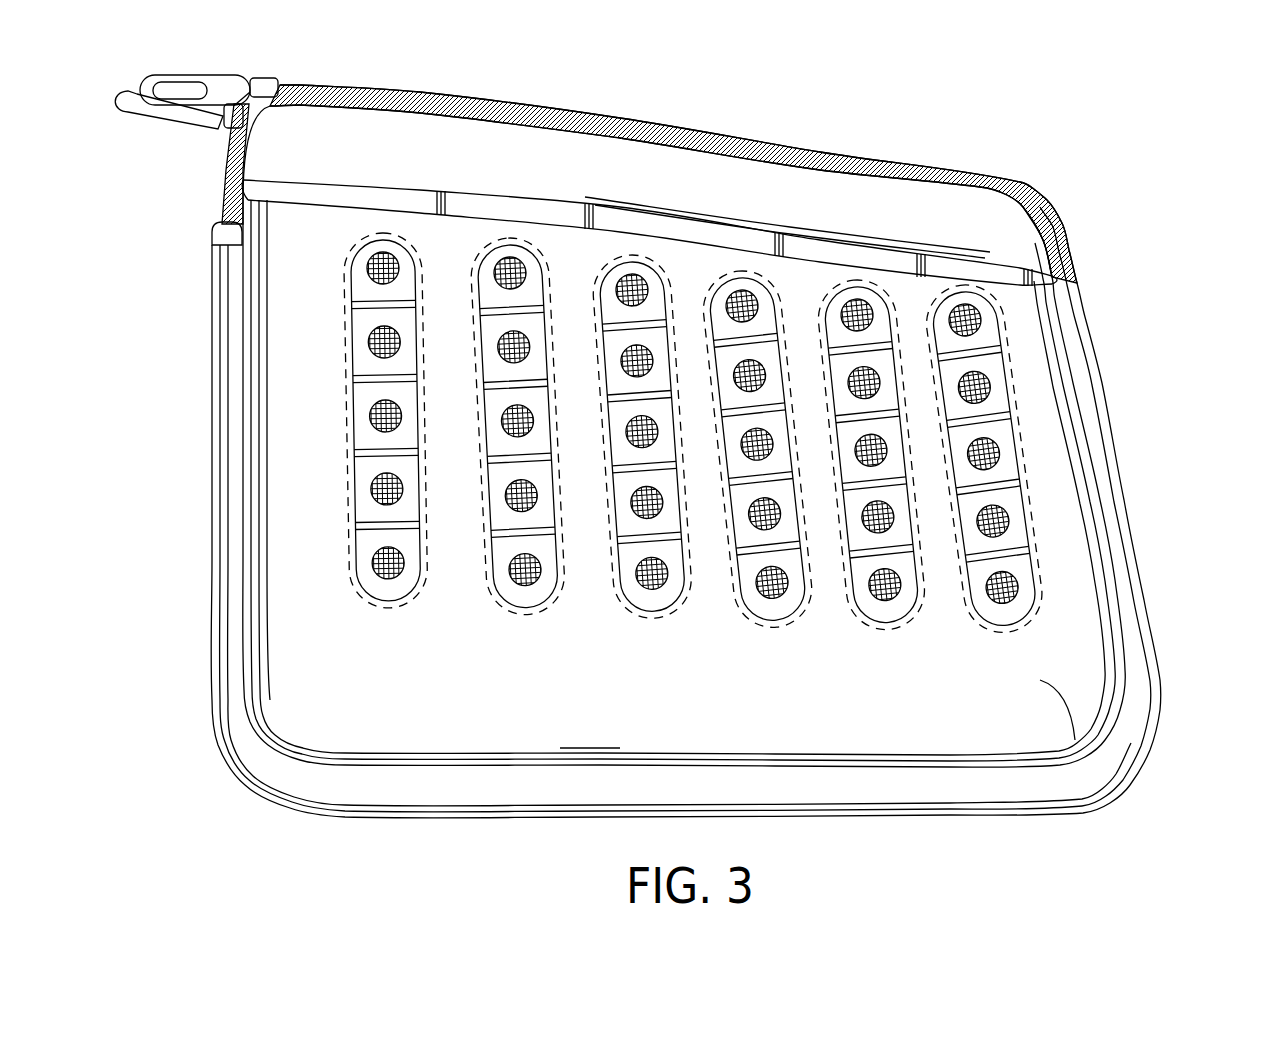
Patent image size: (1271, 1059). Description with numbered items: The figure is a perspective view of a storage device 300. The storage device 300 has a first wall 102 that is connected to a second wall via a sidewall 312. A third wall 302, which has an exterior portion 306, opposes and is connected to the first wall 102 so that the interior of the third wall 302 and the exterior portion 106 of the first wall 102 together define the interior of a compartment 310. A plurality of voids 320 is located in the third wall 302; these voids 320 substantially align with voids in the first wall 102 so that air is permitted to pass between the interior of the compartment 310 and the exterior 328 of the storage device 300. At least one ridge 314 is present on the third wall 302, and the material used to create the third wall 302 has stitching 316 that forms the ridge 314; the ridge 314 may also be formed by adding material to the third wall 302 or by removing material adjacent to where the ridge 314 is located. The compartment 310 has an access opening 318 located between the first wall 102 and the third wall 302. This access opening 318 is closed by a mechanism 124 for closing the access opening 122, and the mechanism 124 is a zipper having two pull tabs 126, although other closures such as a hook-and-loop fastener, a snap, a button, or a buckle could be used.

The first wall 102 is at (1000, 215).
The exterior portion of the first wall 106 is at (1020, 217).
The access opening 122 is at (537, 105).
The mechanism for closing the access opening 124 is at (278, 82).
The pull tabs 126 is at (177, 74).
The storage device 300 is at (1163, 787).
The third wall 302 is at (1033, 320).
The exterior portion of the third wall 306 is at (1060, 372).
The compartment 310 is at (277, 253).
The sidewall 312 is at (223, 533).
The ridge 314 is at (367, 577).
The stitching 316 is at (380, 607).
The access opening 318 is at (337, 188).
The voids 320 is at (1000, 454).
The exterior 328 is at (1078, 658).